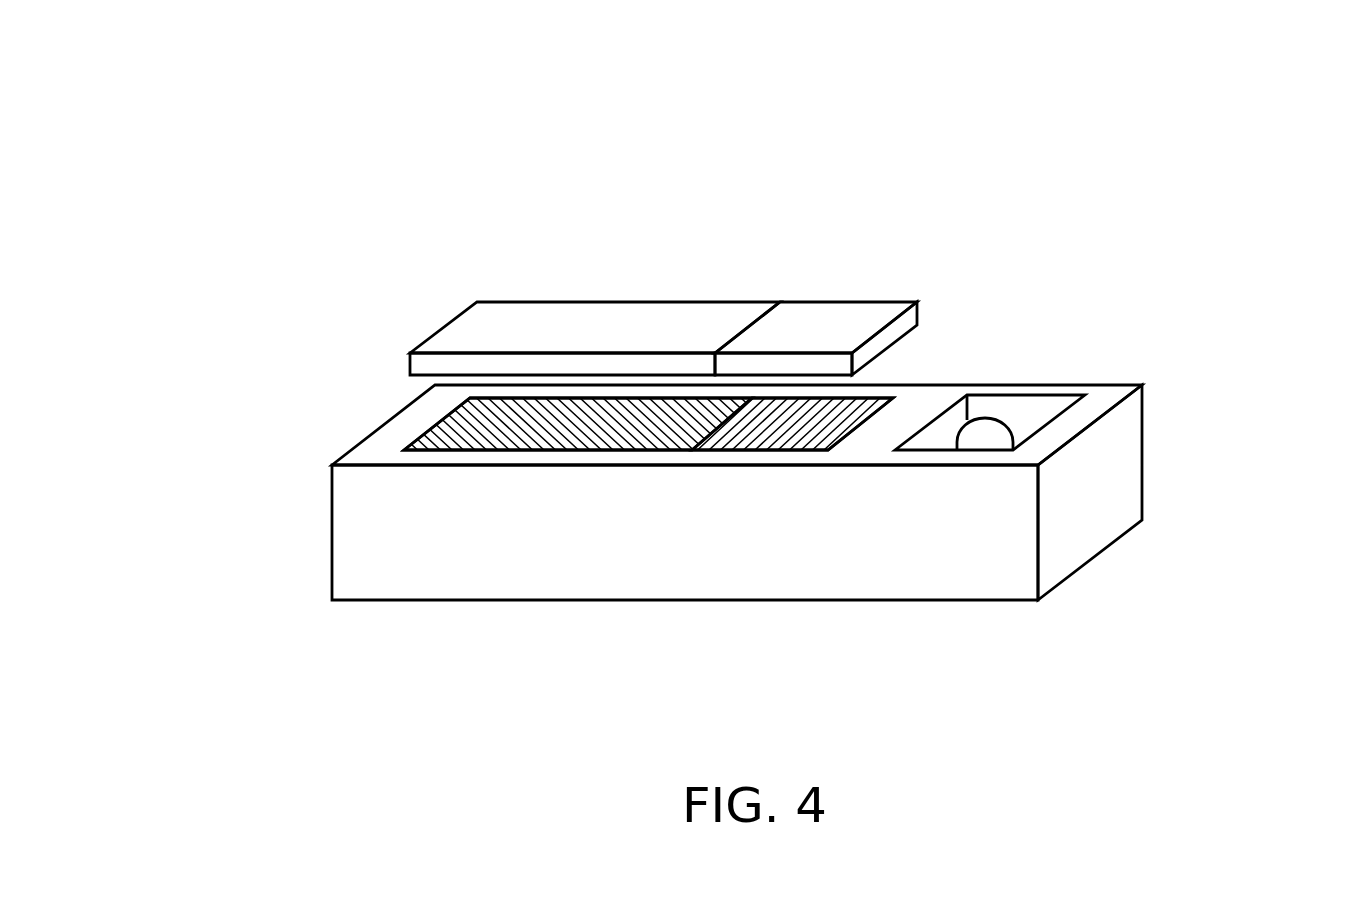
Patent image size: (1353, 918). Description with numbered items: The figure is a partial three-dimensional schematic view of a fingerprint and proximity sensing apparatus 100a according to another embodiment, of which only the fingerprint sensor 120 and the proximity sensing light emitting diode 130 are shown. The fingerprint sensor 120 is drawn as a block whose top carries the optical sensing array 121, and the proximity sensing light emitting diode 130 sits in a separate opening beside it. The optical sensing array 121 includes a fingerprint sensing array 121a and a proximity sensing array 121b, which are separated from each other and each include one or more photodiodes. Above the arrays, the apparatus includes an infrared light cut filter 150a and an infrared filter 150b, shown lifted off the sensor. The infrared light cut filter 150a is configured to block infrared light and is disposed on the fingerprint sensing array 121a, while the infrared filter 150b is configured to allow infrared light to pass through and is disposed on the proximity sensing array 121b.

The fingerprint and proximity sensing apparatus 100a is at (1341, 762).
The fingerprint sensor 120 is at (352, 557).
The optical sensing array 121 is at (178, 23).
The fingerprint sensing array 121a is at (467, 418).
The proximity sensing array 121b is at (840, 407).
The proximity sensing light emitting diode 130 is at (990, 435).
The infrared light cut filter 150a is at (600, 312).
The infrared filter 150b is at (842, 312).